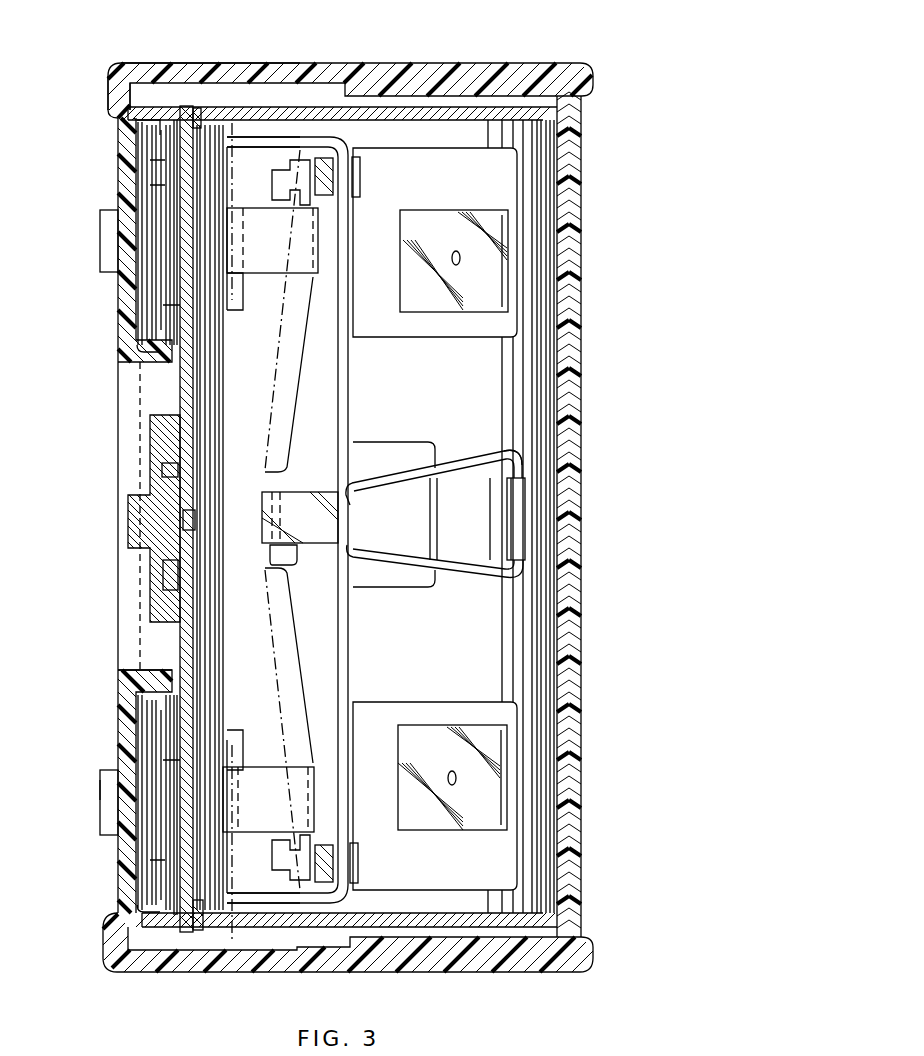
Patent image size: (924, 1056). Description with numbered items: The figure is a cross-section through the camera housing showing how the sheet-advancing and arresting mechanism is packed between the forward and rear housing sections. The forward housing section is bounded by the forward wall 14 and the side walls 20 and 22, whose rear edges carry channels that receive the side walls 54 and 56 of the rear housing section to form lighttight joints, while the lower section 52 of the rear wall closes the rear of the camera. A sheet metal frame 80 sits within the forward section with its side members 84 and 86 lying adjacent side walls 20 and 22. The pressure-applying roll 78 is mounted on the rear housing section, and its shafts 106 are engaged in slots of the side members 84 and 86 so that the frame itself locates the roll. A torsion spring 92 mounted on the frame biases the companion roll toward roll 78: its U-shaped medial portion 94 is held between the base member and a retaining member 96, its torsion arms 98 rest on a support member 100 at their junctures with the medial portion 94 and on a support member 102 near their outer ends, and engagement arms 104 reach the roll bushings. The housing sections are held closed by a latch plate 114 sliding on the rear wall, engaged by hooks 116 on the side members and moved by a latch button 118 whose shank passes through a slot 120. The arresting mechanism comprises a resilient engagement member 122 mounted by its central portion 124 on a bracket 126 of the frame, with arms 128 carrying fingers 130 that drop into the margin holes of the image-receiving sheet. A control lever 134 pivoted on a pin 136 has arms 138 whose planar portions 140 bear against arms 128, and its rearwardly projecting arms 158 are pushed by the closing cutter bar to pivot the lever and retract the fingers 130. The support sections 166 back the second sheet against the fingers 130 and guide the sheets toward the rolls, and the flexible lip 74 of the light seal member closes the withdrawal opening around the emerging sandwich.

The forward wall 14 is at (566, 681).
The side wall 20 is at (452, 78).
The side wall 22 is at (471, 950).
The lower section 52 is at (124, 701).
The side wall 54 is at (172, 72).
The side wall 56 is at (232, 962).
The lip 74 is at (200, 300).
The pressure-applying roll 78 is at (186, 265).
The frame 80 is at (515, 105).
The side member 84 is at (226, 108).
The side member 86 is at (178, 153).
The torsion spring 92 is at (460, 460).
The U-shaped medial portion 94 is at (510, 458).
The retaining member 96 is at (520, 518).
The torsion arms 98 is at (345, 378).
The support member 100 is at (414, 530).
The support member 102 is at (360, 175).
The engagement arms 104 is at (265, 135).
The shafts 106 is at (196, 108).
The latch plate 114 is at (182, 306).
The hooks 116 is at (122, 102).
The latch button 118 is at (148, 518).
The slot 120 is at (165, 576).
The engagement member 122 is at (298, 646).
The central portion 124 is at (323, 530).
The bracket 126 is at (298, 548).
The arms 128 is at (283, 408).
The fingers 130 is at (288, 172).
The control lever 134 is at (100, 791).
The pin 136 is at (146, 183).
The arms 138 is at (323, 247).
The planar portions 140 is at (265, 256).
The arms 158 is at (100, 243).
The support sections 166 is at (248, 128).